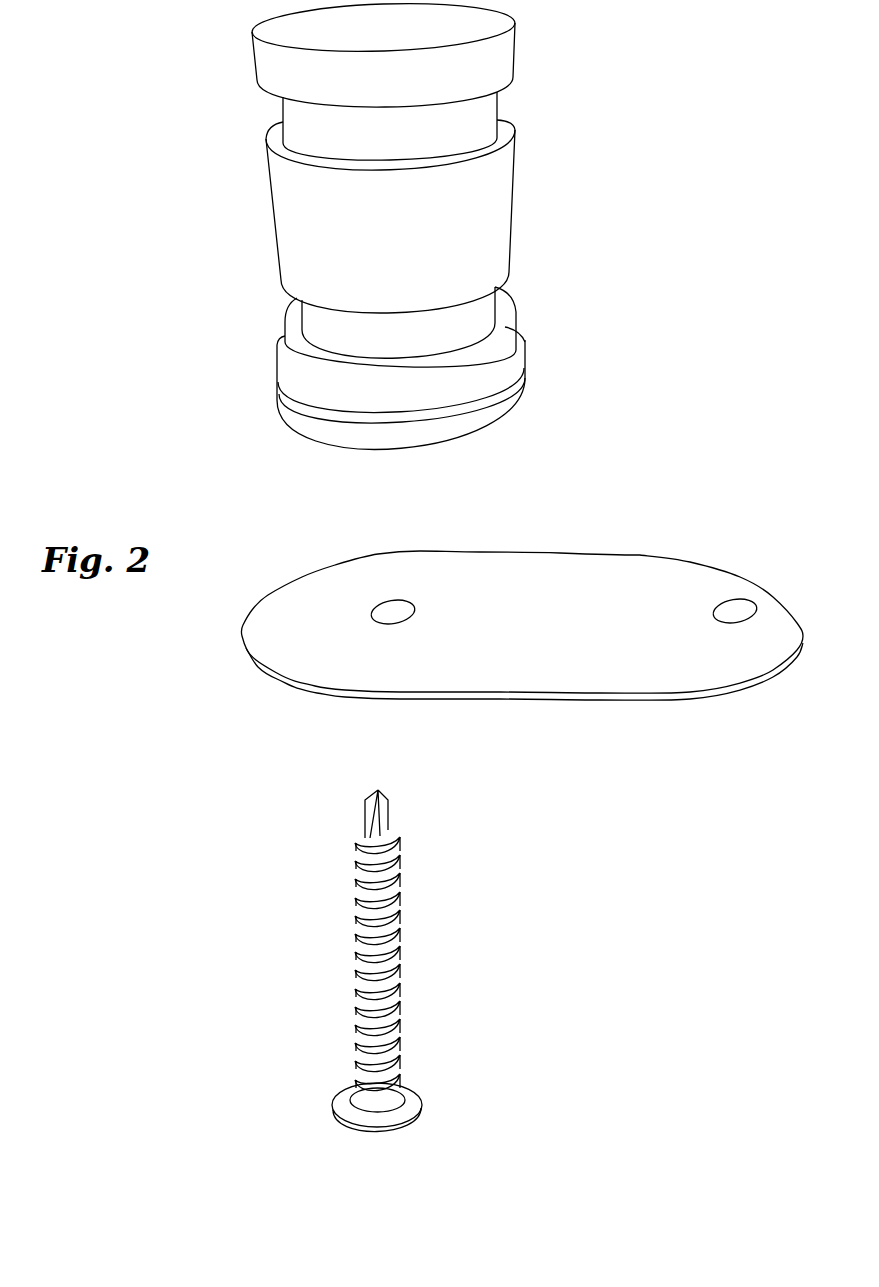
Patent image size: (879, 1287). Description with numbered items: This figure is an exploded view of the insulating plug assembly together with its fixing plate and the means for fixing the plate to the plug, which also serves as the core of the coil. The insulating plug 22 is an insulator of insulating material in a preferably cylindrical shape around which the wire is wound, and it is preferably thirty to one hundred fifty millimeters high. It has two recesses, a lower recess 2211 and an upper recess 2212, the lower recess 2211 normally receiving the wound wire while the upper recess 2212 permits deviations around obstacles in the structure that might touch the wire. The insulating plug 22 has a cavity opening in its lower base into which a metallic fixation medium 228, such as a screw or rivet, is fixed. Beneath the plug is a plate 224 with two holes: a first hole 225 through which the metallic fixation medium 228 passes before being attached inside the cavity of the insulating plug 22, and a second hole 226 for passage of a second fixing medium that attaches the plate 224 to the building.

The insulating plug 22 is at (630, 78).
The lower recess 2211 is at (495, 303).
The upper recess 2212 is at (283, 101).
The plate 224 is at (555, 578).
The first hole 225 is at (388, 610).
The second hole 226 is at (740, 613).
The metallic fixation medium 228 is at (358, 977).